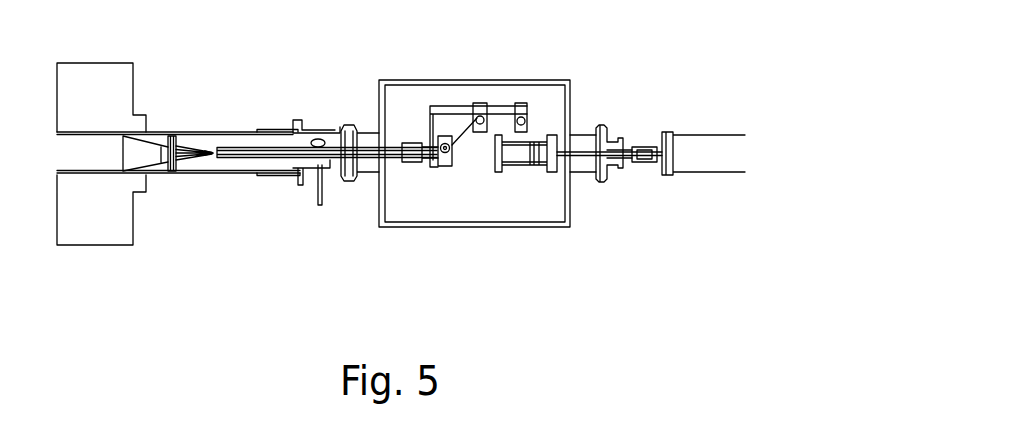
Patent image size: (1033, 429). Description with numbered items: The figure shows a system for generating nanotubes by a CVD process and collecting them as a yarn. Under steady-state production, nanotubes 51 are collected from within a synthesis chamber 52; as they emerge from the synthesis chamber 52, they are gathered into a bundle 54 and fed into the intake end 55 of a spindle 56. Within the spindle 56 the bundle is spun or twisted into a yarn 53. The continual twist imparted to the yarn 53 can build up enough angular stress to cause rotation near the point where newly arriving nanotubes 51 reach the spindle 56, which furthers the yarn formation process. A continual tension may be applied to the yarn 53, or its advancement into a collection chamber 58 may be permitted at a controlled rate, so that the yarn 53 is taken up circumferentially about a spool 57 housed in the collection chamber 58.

The nanotubes 51 is at (183, 147).
The synthesis chamber 52 is at (147, 175).
The yarn 53 is at (335, 153).
The bundle 54 is at (216, 150).
The intake end 55 is at (214, 157).
The spindle 56 is at (275, 143).
The spool 57 is at (522, 165).
The collection chamber 58 is at (453, 82).